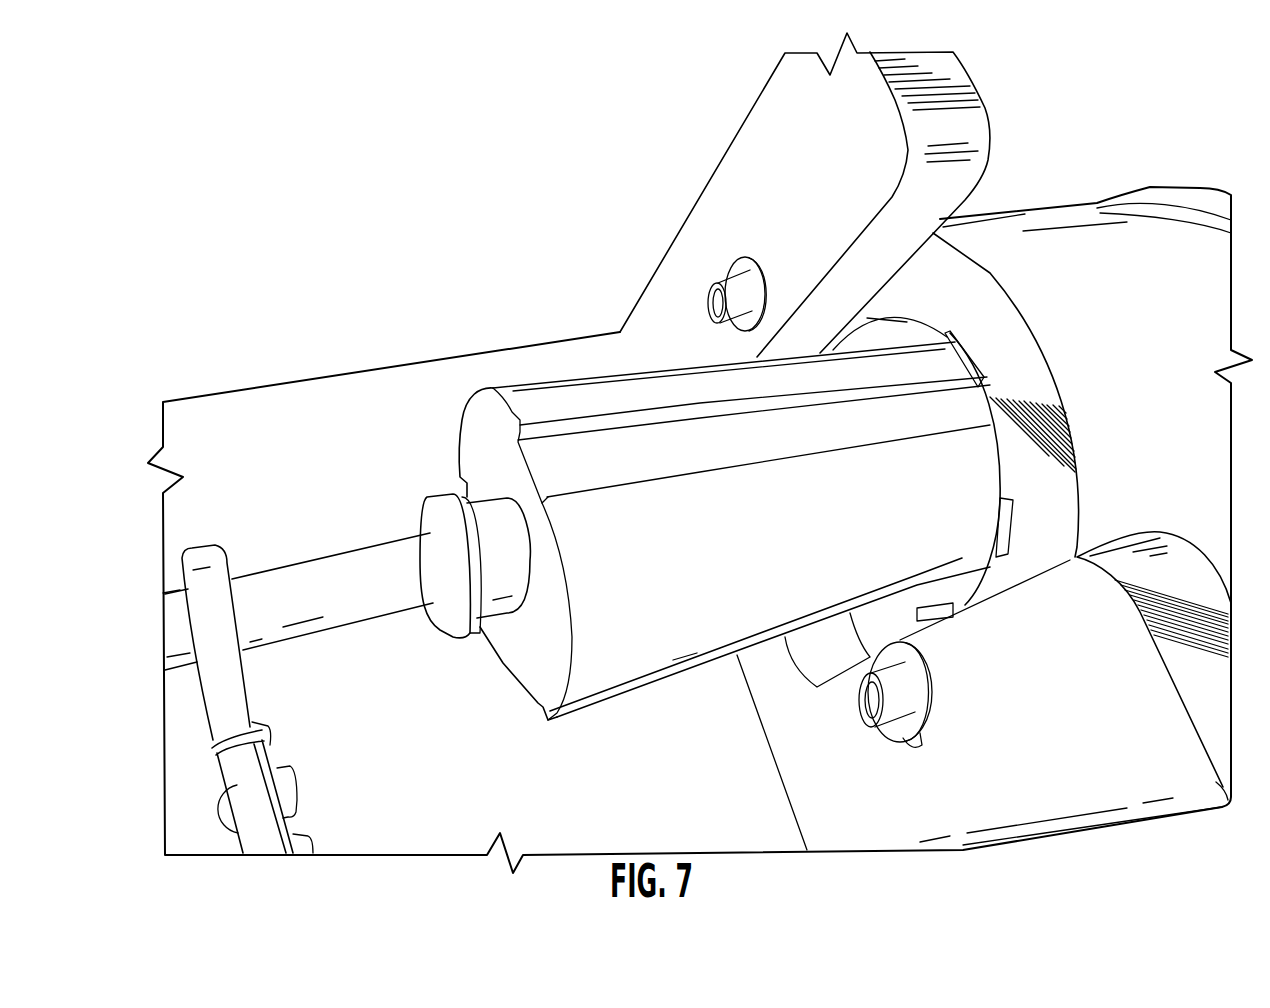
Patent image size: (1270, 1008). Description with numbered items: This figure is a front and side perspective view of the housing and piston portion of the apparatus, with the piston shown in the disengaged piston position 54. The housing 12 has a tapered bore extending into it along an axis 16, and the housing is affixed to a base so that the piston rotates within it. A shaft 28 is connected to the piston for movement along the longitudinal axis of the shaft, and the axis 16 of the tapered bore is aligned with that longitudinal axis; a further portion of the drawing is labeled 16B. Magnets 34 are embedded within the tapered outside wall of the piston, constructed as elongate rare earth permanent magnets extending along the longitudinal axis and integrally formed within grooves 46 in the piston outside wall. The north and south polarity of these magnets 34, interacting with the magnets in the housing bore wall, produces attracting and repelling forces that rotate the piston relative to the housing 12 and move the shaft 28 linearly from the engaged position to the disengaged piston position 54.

The housing 12 is at (1078, 242).
The axis 16 is at (532, 667).
The rotor end portion 16B is at (548, 720).
The shaft 28 is at (330, 575).
The magnets 34 is at (668, 457).
The grooves 46 is at (533, 432).
The disengaged piston position 54 is at (1022, 555).